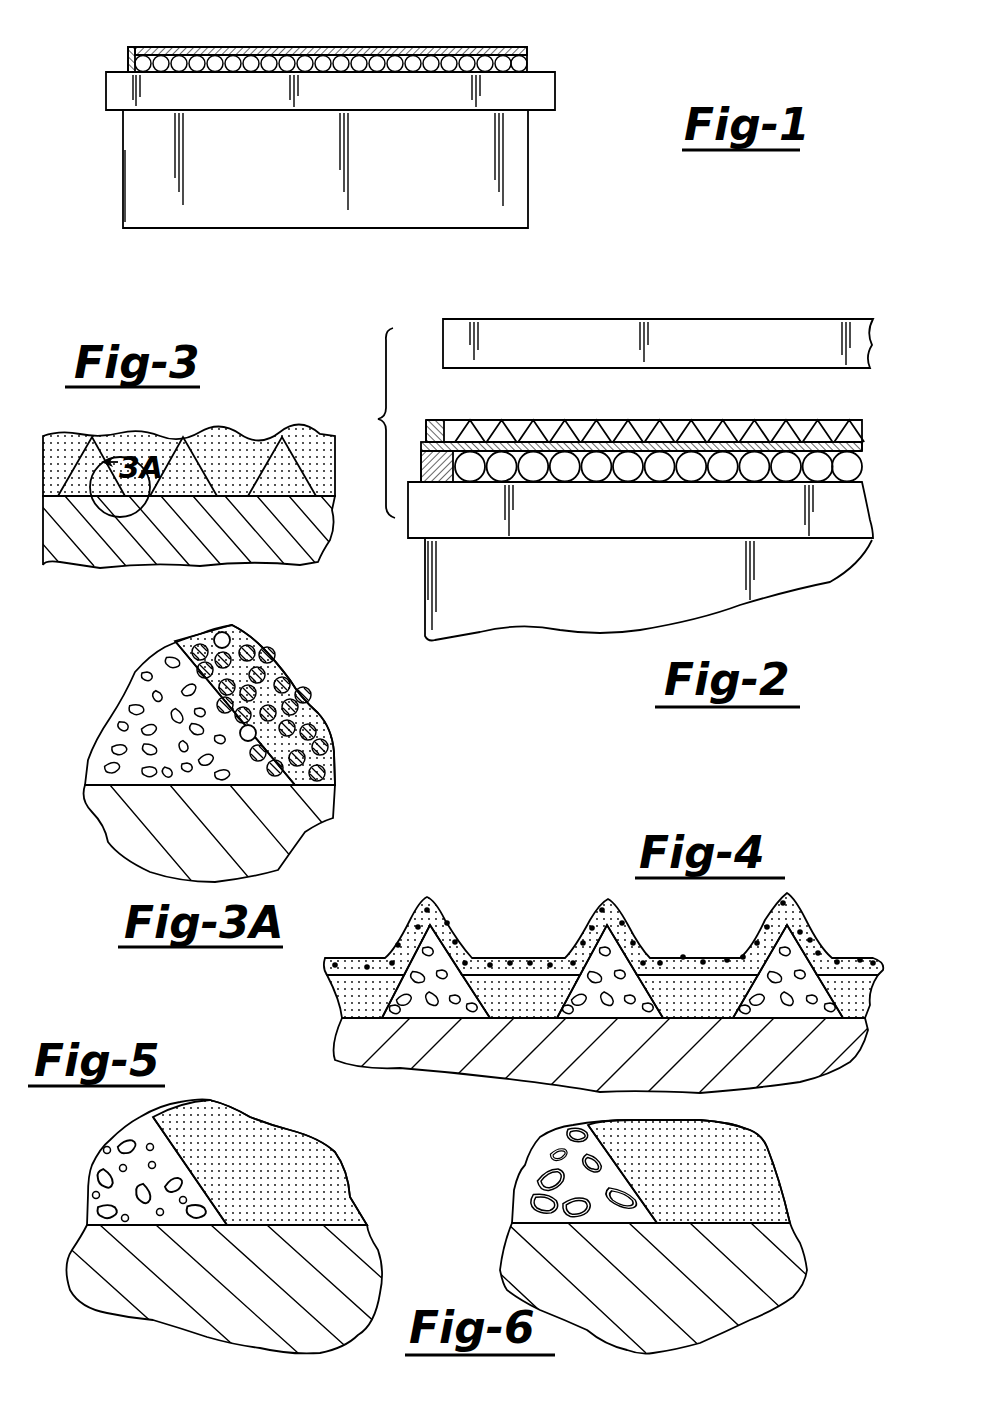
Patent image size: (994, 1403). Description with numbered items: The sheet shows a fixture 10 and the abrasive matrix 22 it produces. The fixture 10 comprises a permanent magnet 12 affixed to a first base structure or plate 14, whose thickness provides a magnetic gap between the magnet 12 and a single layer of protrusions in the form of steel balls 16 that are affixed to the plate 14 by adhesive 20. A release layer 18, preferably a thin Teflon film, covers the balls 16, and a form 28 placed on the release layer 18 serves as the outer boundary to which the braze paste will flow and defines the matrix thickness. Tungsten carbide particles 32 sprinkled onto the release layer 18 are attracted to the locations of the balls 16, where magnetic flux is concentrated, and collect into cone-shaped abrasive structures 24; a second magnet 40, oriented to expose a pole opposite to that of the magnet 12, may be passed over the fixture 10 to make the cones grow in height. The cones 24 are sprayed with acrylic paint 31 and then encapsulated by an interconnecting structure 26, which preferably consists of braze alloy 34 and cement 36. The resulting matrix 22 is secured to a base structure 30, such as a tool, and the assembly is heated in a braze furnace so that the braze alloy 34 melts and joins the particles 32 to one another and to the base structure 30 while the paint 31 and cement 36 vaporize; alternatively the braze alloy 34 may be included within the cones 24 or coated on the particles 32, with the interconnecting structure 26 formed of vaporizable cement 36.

In FIG. 1, the fixture 10 is at (660, 98).
In FIG. 1, the permanent magnet 12 is at (530, 172).
In FIG. 2, the permanent magnet 12 is at (622, 590).
In FIG. 1, the plate 14 is at (556, 92).
In FIG. 2, the plate 14 is at (640, 516).
In FIG. 1, the steel balls 16 is at (523, 50).
In FIG. 1, the release layer 18 is at (370, 48).
In FIG. 2, the release layer 18 is at (433, 447).
In FIG. 1, the adhesive 20 is at (533, 66).
In FIG. 2, the adhesive 20 is at (435, 478).
In FIG. 2, the matrix 22 is at (882, 450).
In FIG. 3, the matrix 22 is at (38, 428).
In FIG. 3A, the matrix 22 is at (128, 655).
In FIG. 4, the matrix 22 is at (603, 919).
In FIG. 5, the matrix 22 is at (356, 1157).
In FIG. 6, the matrix 22 is at (795, 1181).
In FIG. 2, the abrasive structure 24 is at (808, 435).
In FIG. 3, the abrasive structure 24 is at (305, 452).
In FIG. 5, the abrasive structure 24 is at (75, 1199).
In FIG. 6, the abrasive structure 24 is at (537, 1122).
In FIG. 2, the interconnecting structure 26 is at (578, 435).
In FIG. 3, the interconnecting structure 26 is at (210, 452).
In FIG. 3A, the interconnecting structure 26 is at (340, 708).
In FIG. 4, the interconnecting structure 26 is at (602, 996).
In FIG. 5, the interconnecting structure 26 is at (283, 1128).
In FIG. 6, the interconnecting structure 26 is at (790, 1215).
In FIG. 2, the form 28 is at (438, 420).
In FIG. 3, the base structure 30 is at (225, 535).
In FIG. 3A, the base structure 30 is at (290, 808).
In FIG. 4, the base structure 30 is at (697, 1068).
In FIG. 5, the base structure 30 is at (192, 1293).
In FIG. 6, the base structure 30 is at (680, 1290).
In FIG. 3A, the acrylic paint 31 is at (120, 725).
In FIG. 4, the acrylic paint 31 is at (630, 920).
In FIG. 5, the acrylic paint 31 is at (95, 1170).
In FIG. 3A, the tungsten carbide particles 32 is at (145, 672).
In FIG. 4, the tungsten carbide particles 32 is at (450, 930).
In FIG. 5, the tungsten carbide particles 32 is at (168, 1114).
In FIG. 6, the tungsten carbide particles 32 is at (548, 1162).
In FIG. 3A, the braze alloy 34 is at (270, 670).
In FIG. 4, the braze alloy 34 is at (525, 960).
In FIG. 5, the braze alloy 34 is at (108, 1150).
In FIG. 6, the braze alloy 34 is at (527, 1196).
In FIG. 3A, the cement 36 is at (255, 630).
In FIG. 4, the cement 36 is at (433, 905).
In FIG. 5, the cement 36 is at (232, 1135).
In FIG. 6, the cement 36 is at (737, 1160).
In FIG. 2, the second magnet 40 is at (600, 320).